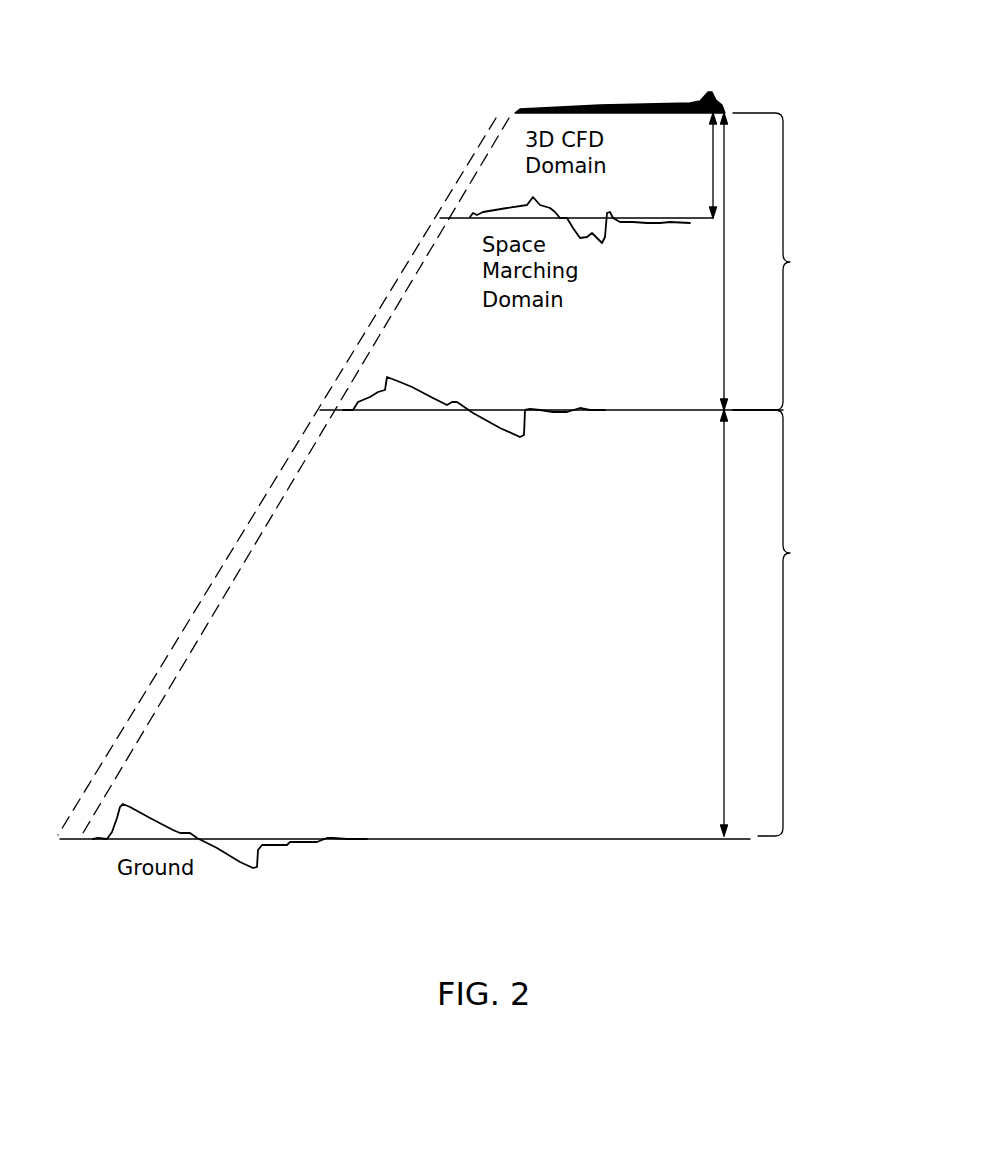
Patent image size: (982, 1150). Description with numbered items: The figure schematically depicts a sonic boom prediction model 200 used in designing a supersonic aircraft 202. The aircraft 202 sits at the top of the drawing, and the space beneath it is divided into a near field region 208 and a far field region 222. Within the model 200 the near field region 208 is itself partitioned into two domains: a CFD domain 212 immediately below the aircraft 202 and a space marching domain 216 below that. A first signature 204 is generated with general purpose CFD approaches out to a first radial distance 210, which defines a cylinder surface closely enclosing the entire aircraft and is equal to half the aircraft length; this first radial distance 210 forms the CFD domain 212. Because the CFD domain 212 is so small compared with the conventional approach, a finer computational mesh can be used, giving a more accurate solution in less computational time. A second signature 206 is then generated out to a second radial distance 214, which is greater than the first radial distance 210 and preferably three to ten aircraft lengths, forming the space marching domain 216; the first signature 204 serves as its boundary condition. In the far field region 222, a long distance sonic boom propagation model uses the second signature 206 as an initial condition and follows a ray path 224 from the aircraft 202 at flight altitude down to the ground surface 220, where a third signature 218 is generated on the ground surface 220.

The model 200 is at (217, 85).
The supersonic aircraft 202 is at (632, 104).
The first signature 204 is at (608, 228).
The second signature 206 is at (423, 390).
The near field region 208 is at (791, 262).
The first radial distance 210 is at (725, 168).
The CFD domain 212 is at (576, 199).
The second radial distance 214 is at (725, 247).
The space marching domain 216 is at (551, 381).
The third signature 218 is at (168, 823).
The ground surface 220 is at (392, 840).
The far field region 222 is at (791, 553).
The ray path 224 is at (270, 490).